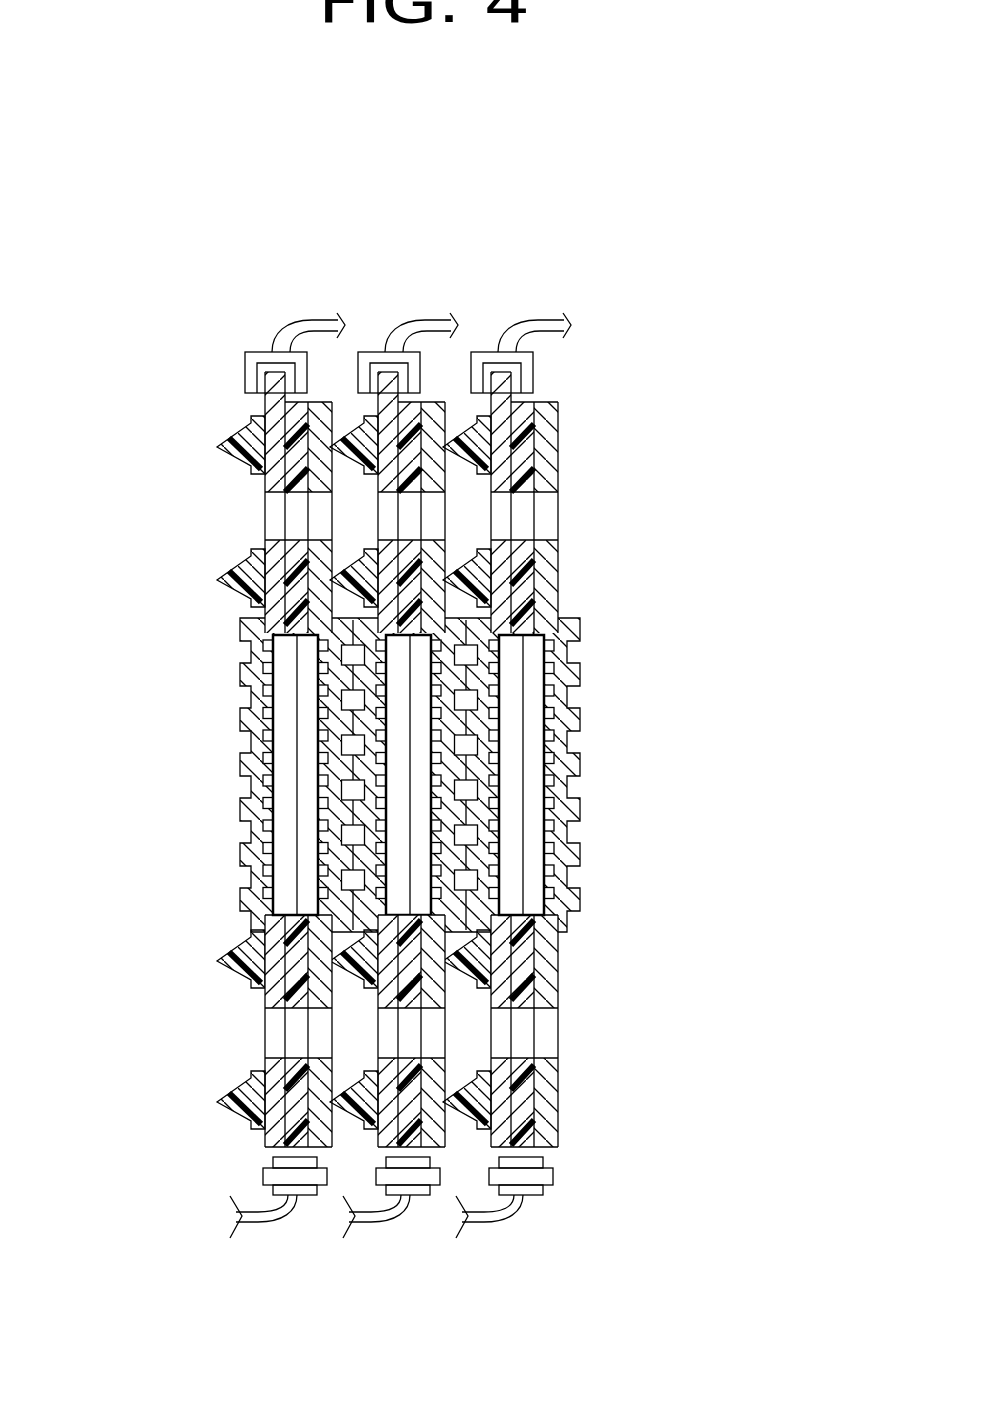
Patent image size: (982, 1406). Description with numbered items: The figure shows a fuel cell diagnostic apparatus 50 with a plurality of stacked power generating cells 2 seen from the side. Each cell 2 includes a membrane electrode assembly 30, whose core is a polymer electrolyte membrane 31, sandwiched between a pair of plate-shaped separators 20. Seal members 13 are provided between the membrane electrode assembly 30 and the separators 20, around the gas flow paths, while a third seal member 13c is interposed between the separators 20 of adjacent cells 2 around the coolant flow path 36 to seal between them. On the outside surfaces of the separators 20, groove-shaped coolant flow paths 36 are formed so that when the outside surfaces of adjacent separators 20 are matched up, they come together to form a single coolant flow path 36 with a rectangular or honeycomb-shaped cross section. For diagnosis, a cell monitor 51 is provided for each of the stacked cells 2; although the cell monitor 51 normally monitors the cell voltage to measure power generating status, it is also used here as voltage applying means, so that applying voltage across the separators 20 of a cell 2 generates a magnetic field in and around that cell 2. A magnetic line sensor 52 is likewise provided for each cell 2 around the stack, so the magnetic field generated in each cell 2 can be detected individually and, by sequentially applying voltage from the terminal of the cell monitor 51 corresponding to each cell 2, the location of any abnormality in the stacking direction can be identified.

The fuel cell diagnostic apparatus 50 is at (233, 221).
The cell monitor 51 is at (483, 350).
The seal members 13 is at (525, 543).
The third seal member 13c is at (215, 1100).
The coolant flow path 36 is at (237, 653).
The membrane electrode assembly 30 is at (285, 832).
The electrolyte membrane 31 is at (522, 832).
The separators 20 is at (545, 1120).
The power generating cell 2 is at (450, 1329).
The magnetic line sensor 52 is at (520, 1196).